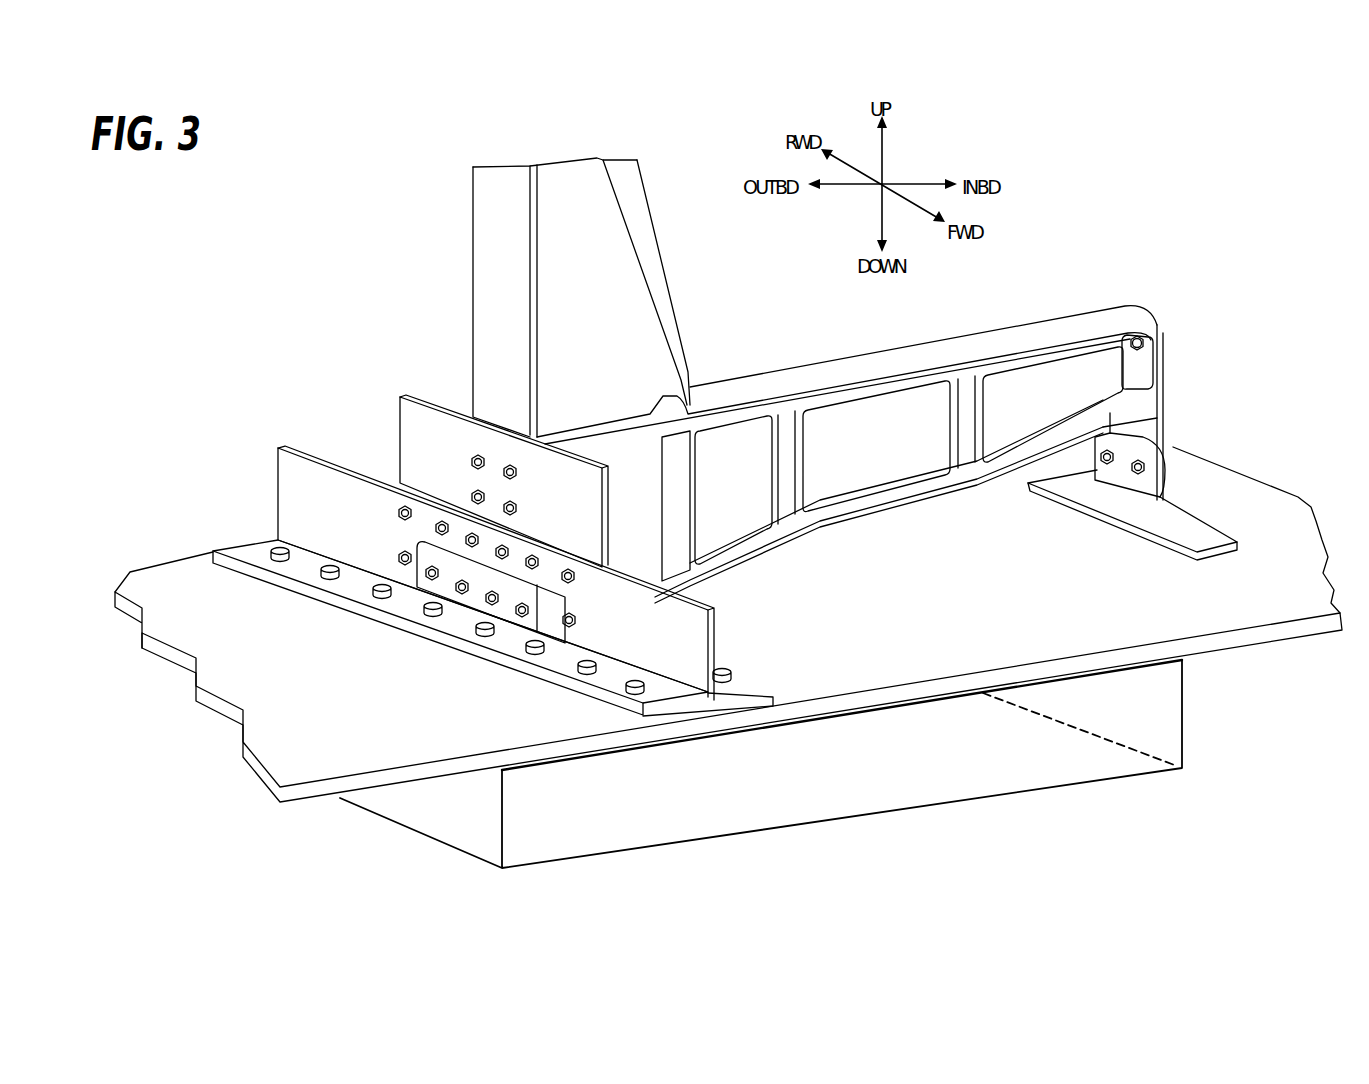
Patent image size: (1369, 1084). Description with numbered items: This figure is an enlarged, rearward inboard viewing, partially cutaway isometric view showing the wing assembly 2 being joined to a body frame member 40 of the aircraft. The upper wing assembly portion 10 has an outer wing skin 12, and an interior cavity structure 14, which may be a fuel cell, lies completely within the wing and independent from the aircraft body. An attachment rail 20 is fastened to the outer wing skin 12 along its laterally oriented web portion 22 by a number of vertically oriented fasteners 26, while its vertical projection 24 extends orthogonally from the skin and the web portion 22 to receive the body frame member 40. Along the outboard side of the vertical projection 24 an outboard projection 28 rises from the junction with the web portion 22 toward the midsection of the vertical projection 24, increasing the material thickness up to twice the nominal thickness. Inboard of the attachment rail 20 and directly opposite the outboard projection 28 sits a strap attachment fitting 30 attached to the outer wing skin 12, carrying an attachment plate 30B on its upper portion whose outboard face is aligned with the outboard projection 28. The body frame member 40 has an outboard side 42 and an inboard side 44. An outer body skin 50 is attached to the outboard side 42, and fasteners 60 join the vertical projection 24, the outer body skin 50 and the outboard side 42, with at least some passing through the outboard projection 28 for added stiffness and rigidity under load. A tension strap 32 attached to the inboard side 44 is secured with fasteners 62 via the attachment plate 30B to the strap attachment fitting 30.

The wing assembly 2 is at (172, 770).
The upper wing assembly portion 10 is at (271, 214).
The outer wing skin 12 is at (193, 597).
The interior cavity structure 14 is at (761, 764).
The attachment rail 20 is at (292, 497).
The web portion 22 is at (259, 553).
The vertical projection 24 is at (318, 455).
The fasteners 26 is at (535, 657).
The outboard projection 28 is at (448, 578).
The strap attachment fitting 30 is at (1222, 537).
The attachment plate 30B is at (1122, 453).
The tension strap 32 is at (1127, 420).
The body frame member 40 is at (740, 392).
The outboard side 42 is at (480, 373).
The inboard side 44 is at (1103, 333).
The outer body skin 50 is at (445, 427).
The fasteners 60 is at (572, 580).
The fasteners 62 is at (1110, 462).